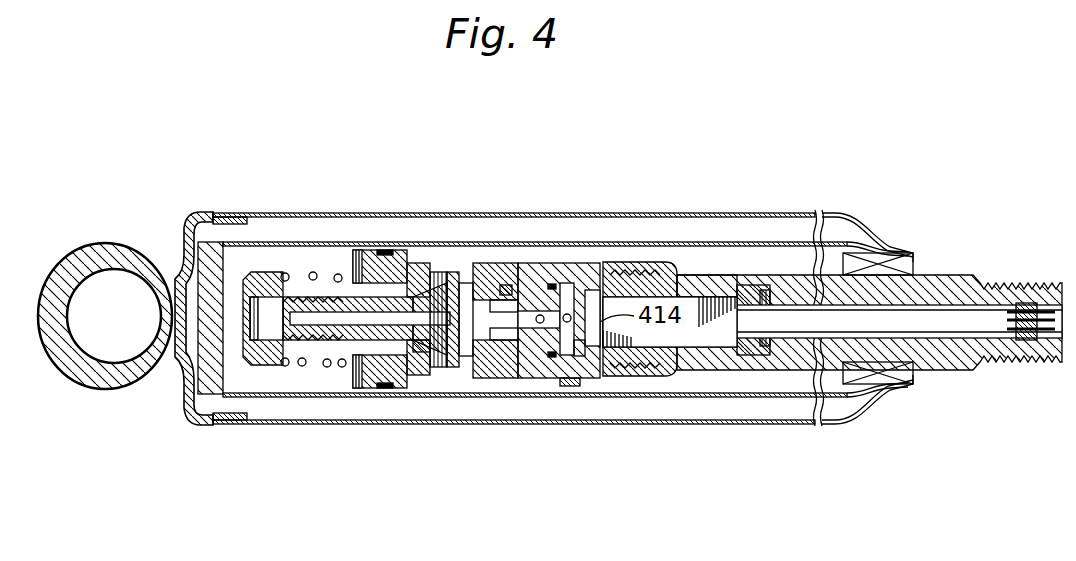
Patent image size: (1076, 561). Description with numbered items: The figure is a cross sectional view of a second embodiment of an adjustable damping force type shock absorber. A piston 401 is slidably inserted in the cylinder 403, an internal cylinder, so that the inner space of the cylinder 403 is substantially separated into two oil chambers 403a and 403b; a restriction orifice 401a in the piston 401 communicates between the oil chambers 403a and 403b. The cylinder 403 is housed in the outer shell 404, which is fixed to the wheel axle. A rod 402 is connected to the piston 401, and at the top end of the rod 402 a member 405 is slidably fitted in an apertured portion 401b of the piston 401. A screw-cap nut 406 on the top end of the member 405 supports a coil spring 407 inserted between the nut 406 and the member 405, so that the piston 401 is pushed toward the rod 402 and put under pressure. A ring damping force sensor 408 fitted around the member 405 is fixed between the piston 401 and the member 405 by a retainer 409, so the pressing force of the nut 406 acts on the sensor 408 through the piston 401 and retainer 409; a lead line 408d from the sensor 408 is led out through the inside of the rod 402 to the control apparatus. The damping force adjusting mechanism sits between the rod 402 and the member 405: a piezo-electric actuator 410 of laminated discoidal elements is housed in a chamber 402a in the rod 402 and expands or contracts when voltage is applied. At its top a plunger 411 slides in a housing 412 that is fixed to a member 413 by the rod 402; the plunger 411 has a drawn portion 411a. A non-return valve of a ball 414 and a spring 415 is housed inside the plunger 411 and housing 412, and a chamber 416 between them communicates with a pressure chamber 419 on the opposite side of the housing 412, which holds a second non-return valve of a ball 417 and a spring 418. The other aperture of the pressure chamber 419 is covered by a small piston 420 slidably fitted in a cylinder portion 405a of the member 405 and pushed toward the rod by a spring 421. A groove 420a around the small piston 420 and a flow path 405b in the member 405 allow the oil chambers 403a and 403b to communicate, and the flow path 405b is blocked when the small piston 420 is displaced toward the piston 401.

The piston 401 is at (430, 376).
The restriction orifice 401a is at (393, 373).
The apertured portion 401b is at (368, 381).
The rod 402 is at (783, 276).
The chamber 402a is at (690, 290).
The cylinder 403 is at (513, 397).
The oil chamber 403a is at (298, 396).
The oil chamber 403b is at (570, 388).
The outer shell 404 is at (287, 262).
The member 405 is at (462, 265).
The cylinder portion 405a is at (482, 272).
The flow path 405b is at (454, 373).
The screw-cap nut 406 is at (262, 366).
The coil spring 407 is at (288, 268).
The damping force sensor 408 is at (410, 256).
The lead line 408d is at (506, 285).
The retainer 409 is at (410, 262).
The piezo-electric actuator 410 is at (716, 368).
The plunger 411 is at (607, 275).
The nut thread 411a is at (627, 377).
The housing 412 is at (552, 290).
The member 413 is at (692, 372).
The ball 414 is at (600, 322).
The spring 415 is at (588, 382).
The chamber 416 is at (560, 377).
The ball 417 is at (578, 300).
The spring 418 is at (547, 373).
The pressure chamber 419 is at (528, 300).
The small piston 420 is at (470, 373).
The groove 420a is at (457, 268).
The spring 421 is at (500, 373).